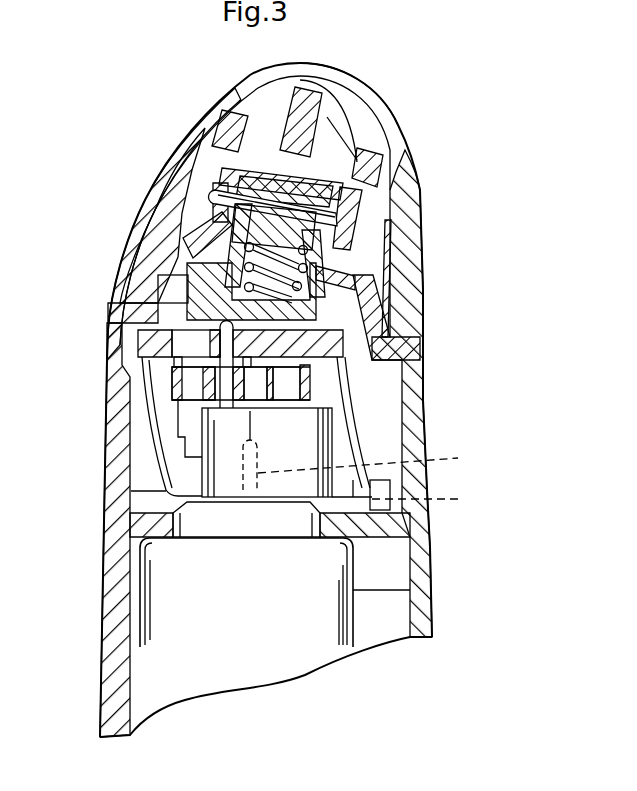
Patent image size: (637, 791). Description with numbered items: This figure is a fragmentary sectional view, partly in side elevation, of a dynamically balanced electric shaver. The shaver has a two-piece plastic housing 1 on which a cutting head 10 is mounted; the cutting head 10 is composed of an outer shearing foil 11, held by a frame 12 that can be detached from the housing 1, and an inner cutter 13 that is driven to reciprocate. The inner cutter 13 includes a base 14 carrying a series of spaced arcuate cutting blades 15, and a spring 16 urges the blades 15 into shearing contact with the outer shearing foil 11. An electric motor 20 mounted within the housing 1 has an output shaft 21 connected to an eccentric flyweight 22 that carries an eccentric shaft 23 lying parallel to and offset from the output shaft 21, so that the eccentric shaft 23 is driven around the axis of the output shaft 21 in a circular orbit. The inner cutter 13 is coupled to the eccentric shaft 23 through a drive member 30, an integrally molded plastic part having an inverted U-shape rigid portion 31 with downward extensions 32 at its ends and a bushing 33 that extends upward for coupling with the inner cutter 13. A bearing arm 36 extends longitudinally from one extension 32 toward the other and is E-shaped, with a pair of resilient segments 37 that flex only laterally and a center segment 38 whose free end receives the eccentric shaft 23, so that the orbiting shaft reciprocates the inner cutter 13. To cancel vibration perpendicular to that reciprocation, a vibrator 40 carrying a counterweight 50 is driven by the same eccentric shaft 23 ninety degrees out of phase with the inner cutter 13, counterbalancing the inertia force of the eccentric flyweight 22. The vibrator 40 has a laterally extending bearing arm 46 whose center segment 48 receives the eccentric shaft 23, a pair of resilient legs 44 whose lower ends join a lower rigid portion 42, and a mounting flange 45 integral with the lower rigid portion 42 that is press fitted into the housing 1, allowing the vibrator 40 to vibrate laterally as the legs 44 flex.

The housing 1 is at (103, 610).
The cutting head 10 is at (177, 139).
The outer shearing foil 11 is at (381, 103).
The frame 12 is at (121, 247).
The inner cutter 13 is at (218, 172).
The base 14 is at (347, 167).
The arcuate cutting blades 15 is at (363, 130).
The spring 16 is at (352, 242).
The electric motor 20 is at (305, 650).
The output shaft 21 is at (362, 465).
The eccentric flyweight 22 is at (333, 430).
The eccentric shaft 23 is at (158, 326).
The drive member 30 is at (187, 295).
The inverted U-shape rigid portion 31 is at (187, 274).
The downward extensions 32 is at (133, 480).
The bushing 33 is at (232, 250).
The bearing arm 36 is at (350, 330).
The resilient segments 37 is at (178, 386).
The center segment 38 is at (205, 387).
The vibrator 40 is at (137, 344).
The lower rigid portion 42 is at (128, 522).
The resilient legs 44 is at (178, 427).
The mounting flange 45 is at (431, 499).
The bearing arm 46 is at (343, 328).
The center segment 48 is at (320, 322).
The counterweight 50 is at (192, 440).